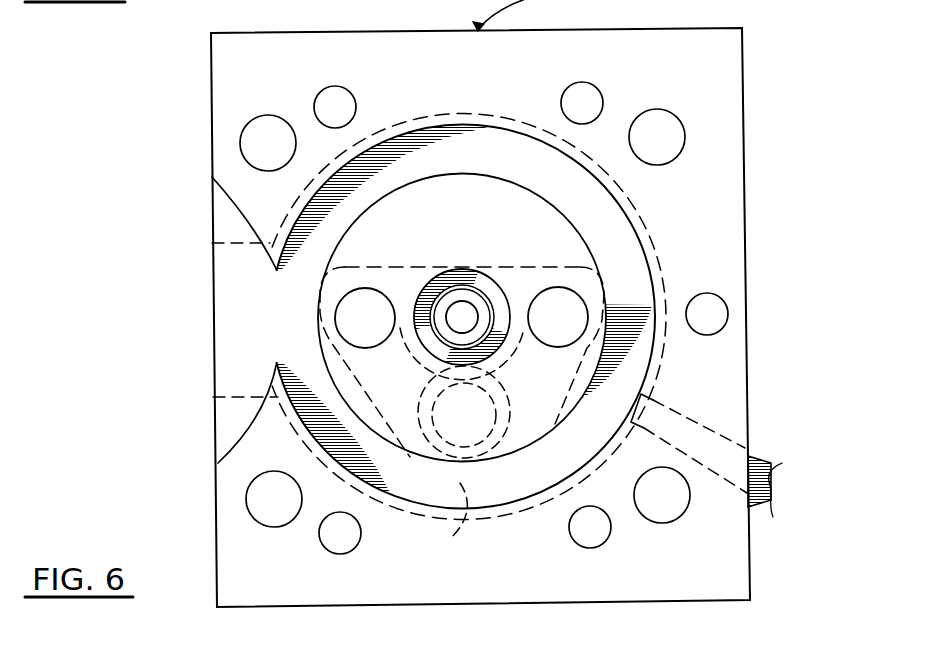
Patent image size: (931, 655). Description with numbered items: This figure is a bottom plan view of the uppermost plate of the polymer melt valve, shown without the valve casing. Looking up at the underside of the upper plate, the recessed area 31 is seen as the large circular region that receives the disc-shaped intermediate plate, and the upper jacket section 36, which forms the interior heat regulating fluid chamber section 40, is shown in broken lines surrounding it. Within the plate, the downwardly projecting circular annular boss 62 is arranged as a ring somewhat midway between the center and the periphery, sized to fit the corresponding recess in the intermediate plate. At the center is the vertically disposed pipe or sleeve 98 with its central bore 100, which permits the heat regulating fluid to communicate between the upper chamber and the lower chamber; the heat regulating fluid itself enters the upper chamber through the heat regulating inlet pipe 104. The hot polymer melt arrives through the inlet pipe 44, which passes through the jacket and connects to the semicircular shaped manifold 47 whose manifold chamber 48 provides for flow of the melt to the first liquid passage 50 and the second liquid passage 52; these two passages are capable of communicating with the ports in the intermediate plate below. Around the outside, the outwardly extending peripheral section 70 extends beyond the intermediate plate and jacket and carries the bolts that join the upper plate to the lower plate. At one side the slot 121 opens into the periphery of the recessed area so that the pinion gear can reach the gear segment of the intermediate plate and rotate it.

The recessed area 31 is at (432, 128).
The upper jacket section 36 is at (483, 116).
The heat regulating fluid chamber section 40 is at (470, 528).
The inlet pipe 44 is at (480, 455).
The semicircular shaped manifold 47 is at (395, 460).
The manifold chamber 48 is at (548, 398).
The first liquid passage 50 is at (360, 294).
The second liquid passage 52 is at (577, 306).
The annular boss 62 is at (533, 228).
The outwardly extending peripheral section 70 is at (733, 178).
The pipe or sleeve 98 is at (477, 297).
The central bore 100 is at (444, 322).
The heat regulating inlet pipe 104 is at (752, 462).
The slot 121 is at (247, 308).